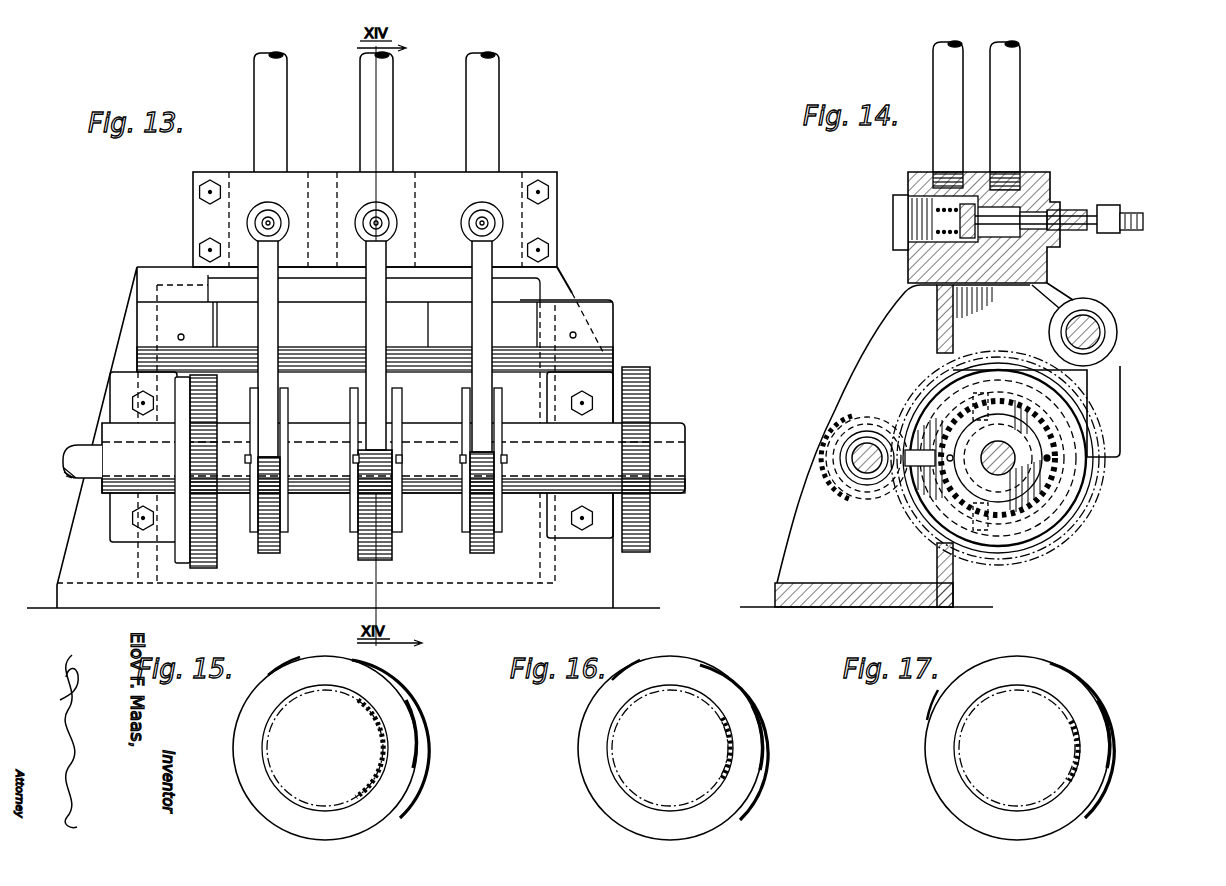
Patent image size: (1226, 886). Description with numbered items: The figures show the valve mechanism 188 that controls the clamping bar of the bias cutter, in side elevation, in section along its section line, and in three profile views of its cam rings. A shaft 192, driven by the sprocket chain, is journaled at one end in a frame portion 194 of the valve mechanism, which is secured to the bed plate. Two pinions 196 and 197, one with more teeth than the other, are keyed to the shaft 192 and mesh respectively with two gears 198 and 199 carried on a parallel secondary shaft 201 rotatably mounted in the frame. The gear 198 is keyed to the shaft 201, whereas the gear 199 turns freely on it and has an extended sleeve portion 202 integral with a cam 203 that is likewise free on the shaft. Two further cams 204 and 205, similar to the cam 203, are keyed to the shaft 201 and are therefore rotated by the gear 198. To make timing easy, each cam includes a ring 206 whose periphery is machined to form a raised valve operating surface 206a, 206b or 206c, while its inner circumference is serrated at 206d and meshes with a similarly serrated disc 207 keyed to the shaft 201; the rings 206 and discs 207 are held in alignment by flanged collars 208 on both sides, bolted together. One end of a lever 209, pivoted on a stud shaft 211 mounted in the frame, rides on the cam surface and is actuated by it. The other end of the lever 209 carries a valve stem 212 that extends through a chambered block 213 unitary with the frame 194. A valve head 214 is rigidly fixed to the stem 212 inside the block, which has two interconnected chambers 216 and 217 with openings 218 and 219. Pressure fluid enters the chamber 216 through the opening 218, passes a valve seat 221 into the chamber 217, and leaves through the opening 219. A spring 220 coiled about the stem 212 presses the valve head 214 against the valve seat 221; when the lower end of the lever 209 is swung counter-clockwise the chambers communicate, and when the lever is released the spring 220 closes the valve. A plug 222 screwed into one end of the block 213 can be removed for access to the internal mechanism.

In FIG. 13, the valve mechanism 188 is at (580, 292).
In FIG. 13, the shaft 192 is at (73, 445).
In FIG. 14, the shaft 192 is at (860, 468).
In FIG. 13, the frame portion 194 is at (48, 543).
In FIG. 14, the frame portion 194 is at (857, 352).
In FIG. 14, the pinion 196 is at (820, 447).
In FIG. 14, the pinion 197 is at (862, 492).
In FIG. 13, the gear 198 is at (645, 367).
In FIG. 14, the gear 198 is at (1052, 525).
In FIG. 14, the gear 199 is at (1085, 530).
In FIG. 13, the secondary shaft 201 is at (512, 445).
In FIG. 14, the secondary shaft 201 is at (1010, 470).
In FIG. 13, the sleeve portion 202 is at (222, 497).
In FIG. 13, the cam 203 is at (215, 547).
In FIG. 13, the cam 204 is at (392, 546).
In FIG. 13, the cam 205 is at (494, 546).
In FIG. 13, the ring 206 is at (283, 512).
In FIG. 14, the ring 206 is at (1045, 462).
In FIG. 15, the ring 206 is at (398, 782).
In FIG. 16, the ring 206 is at (598, 755).
In FIG. 17, the ring 206 is at (940, 742).
In FIG. 15, the raised valve operating surface 206a is at (414, 717).
In FIG. 16, the raised valve operating surface 206b is at (758, 708).
In FIG. 17, the raised valve operating surface 206c is at (1082, 677).
In FIG. 14, the serrated inner circumferential portion 206d is at (1000, 525).
In FIG. 15, the serrated inner circumferential portion 206d is at (375, 728).
In FIG. 16, the serrated inner circumferential portion 206d is at (728, 742).
In FIG. 17, the serrated inner circumferential portion 206d is at (1068, 745).
In FIG. 14, the serrated disc 207 is at (1037, 497).
In FIG. 15, the serrated disc 207 is at (268, 770).
In FIG. 16, the serrated disc 207 is at (620, 773).
In FIG. 17, the serrated disc 207 is at (980, 785).
In FIG. 13, the flanged collar 208 is at (288, 401).
In FIG. 13, the lever 209 is at (283, 328).
In FIG. 14, the lever 209 is at (1112, 415).
In FIG. 14, the stud shaft 211 is at (1100, 332).
In FIG. 14, the valve stem 212 is at (1078, 230).
In FIG. 13, the chambered block 213 is at (296, 172).
In FIG. 14, the chambered block 213 is at (1050, 183).
In FIG. 14, the valve head 214 is at (991, 301).
In FIG. 14, the chamber 216 is at (908, 201).
In FIG. 14, the chamber 217 is at (1010, 212).
In FIG. 14, the opening 218 is at (940, 172).
In FIG. 14, the opening 219 is at (1012, 172).
In FIG. 14, the spring 220 is at (935, 238).
In FIG. 14, the valve seat 221 is at (967, 204).
In FIG. 14, the plug 222 is at (893, 220).